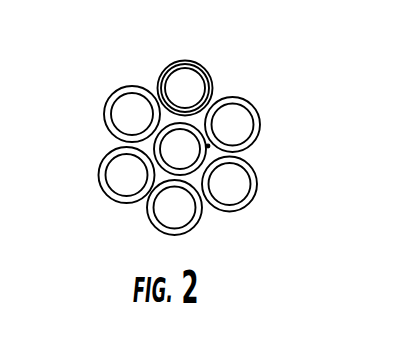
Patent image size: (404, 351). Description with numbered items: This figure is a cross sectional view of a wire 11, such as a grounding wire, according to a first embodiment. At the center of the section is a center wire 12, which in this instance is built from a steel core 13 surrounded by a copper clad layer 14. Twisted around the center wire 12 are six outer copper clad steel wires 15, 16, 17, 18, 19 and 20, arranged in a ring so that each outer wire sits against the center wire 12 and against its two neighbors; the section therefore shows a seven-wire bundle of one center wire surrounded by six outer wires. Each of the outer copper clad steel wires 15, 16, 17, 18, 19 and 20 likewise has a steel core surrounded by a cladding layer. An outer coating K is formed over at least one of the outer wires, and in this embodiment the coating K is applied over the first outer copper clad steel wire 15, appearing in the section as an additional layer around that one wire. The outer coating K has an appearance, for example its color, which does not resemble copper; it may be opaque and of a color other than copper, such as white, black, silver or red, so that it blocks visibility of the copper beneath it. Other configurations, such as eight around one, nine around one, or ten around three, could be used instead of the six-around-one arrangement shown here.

The wire 11 is at (297, 73).
The center wire 12 is at (153, 165).
The steel core 13 is at (172, 160).
The copper clad layer 14 is at (208, 146).
The first outer copper clad steel wire 15 is at (192, 48).
The outer copper clad steel wire 16 is at (120, 82).
The outer copper clad steel wire 17 is at (92, 173).
The outer copper clad steel wire 18 is at (190, 235).
The outer copper clad steel wire 19 is at (262, 200).
The outer copper clad steel wire 20 is at (265, 110).
The outer coating K is at (200, 65).